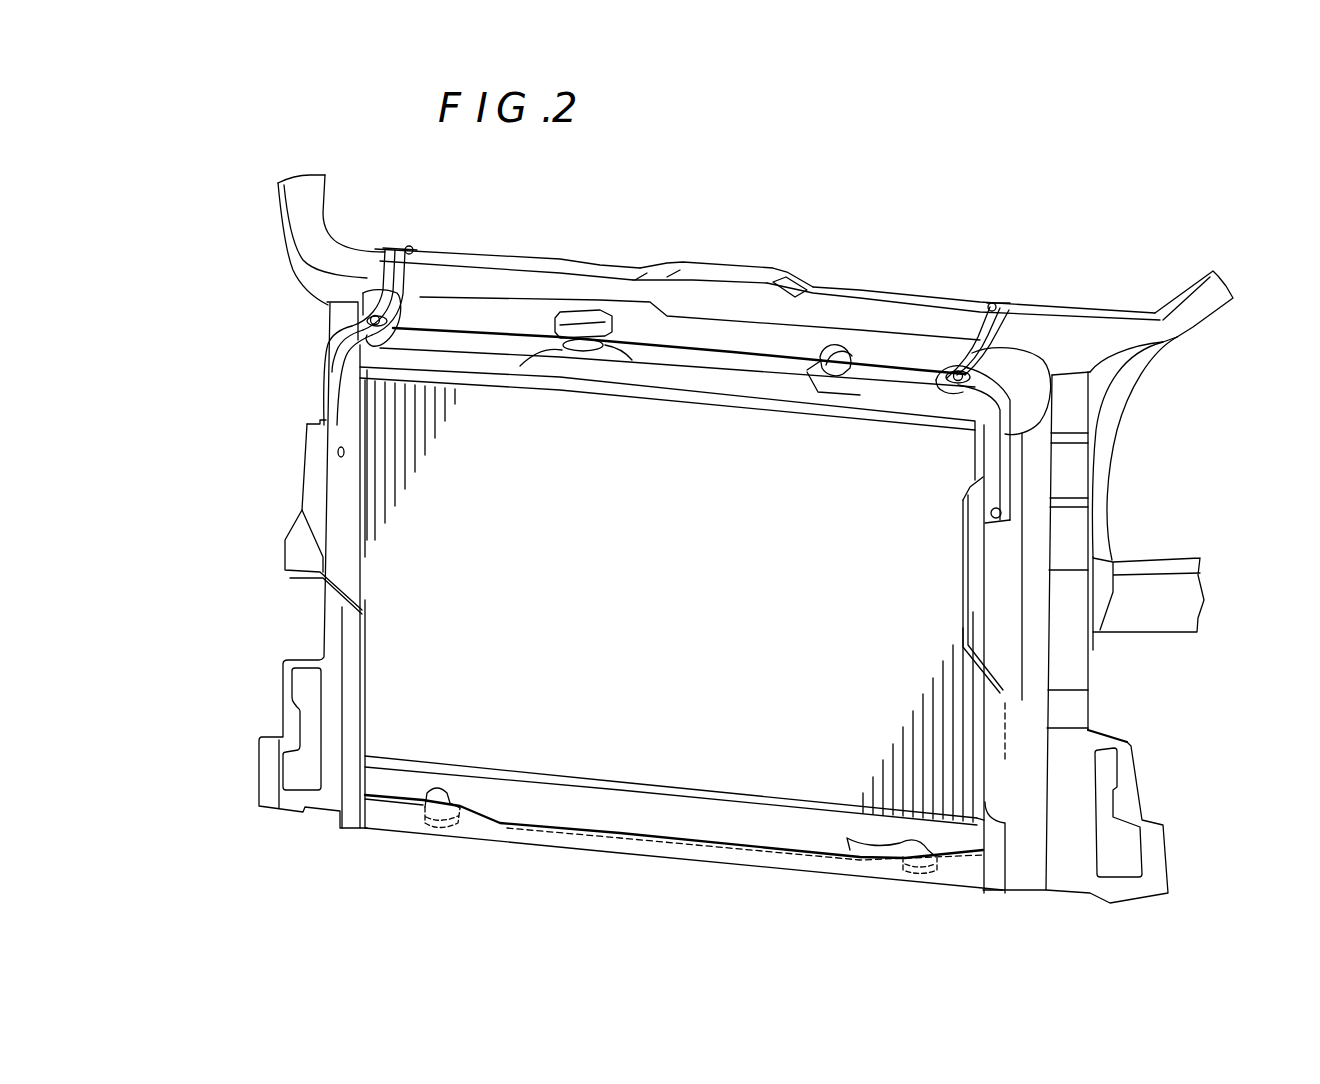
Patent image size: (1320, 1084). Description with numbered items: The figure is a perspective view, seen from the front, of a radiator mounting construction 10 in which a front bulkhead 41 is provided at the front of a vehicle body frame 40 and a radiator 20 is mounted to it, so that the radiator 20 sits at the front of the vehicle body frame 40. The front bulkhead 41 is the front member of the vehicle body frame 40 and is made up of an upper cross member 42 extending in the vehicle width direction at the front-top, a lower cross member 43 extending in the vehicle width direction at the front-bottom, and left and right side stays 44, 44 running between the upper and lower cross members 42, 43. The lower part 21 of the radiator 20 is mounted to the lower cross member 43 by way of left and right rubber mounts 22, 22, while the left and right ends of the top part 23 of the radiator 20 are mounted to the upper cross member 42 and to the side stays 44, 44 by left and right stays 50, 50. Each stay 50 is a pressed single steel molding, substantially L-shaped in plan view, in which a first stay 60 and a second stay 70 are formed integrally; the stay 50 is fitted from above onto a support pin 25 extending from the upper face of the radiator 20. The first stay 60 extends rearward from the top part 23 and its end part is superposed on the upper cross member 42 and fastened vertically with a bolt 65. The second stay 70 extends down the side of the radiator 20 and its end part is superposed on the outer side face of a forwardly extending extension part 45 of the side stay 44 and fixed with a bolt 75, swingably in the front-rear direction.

The radiator support structure 10 is at (190, 222).
The radiator 20 is at (646, 422).
The lower part of the radiator 21 is at (670, 830).
The rubber mount 22 is at (433, 826).
The top part of the radiator 23 is at (858, 378).
The support pin 25 is at (385, 316).
The vehicle body frame 40 is at (1193, 256).
The front bulkhead 41 is at (768, 262).
The upper cross member 42 is at (692, 290).
The lower cross member 43 is at (486, 830).
The side stay 44 is at (328, 628).
The extension part of the side stay 45 is at (308, 500).
The stay 50 is at (220, 272).
The first stay 60 is at (370, 275).
The bolt 65 is at (409, 247).
The second stay 70 is at (316, 360).
The bolt 75 is at (338, 452).